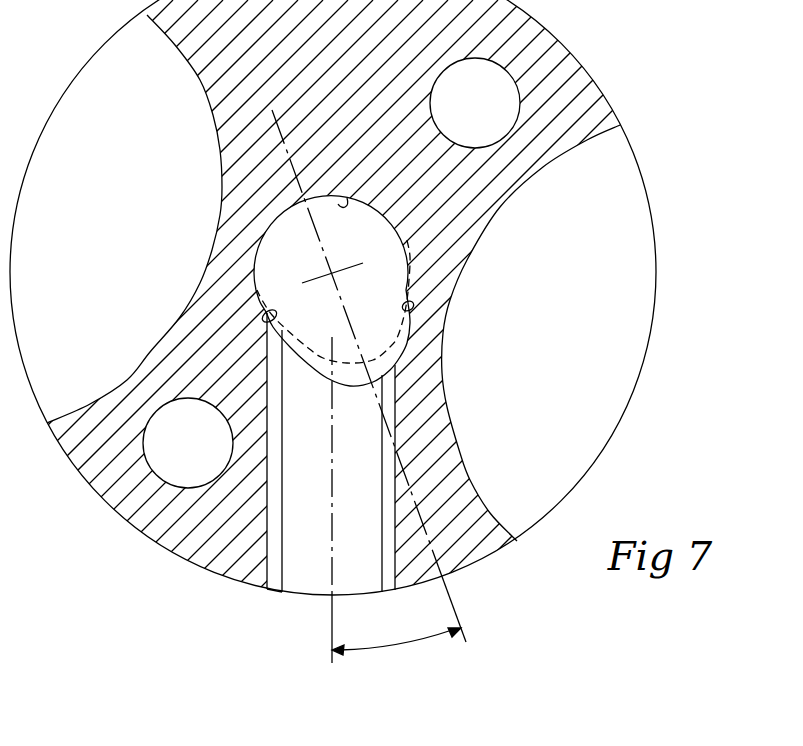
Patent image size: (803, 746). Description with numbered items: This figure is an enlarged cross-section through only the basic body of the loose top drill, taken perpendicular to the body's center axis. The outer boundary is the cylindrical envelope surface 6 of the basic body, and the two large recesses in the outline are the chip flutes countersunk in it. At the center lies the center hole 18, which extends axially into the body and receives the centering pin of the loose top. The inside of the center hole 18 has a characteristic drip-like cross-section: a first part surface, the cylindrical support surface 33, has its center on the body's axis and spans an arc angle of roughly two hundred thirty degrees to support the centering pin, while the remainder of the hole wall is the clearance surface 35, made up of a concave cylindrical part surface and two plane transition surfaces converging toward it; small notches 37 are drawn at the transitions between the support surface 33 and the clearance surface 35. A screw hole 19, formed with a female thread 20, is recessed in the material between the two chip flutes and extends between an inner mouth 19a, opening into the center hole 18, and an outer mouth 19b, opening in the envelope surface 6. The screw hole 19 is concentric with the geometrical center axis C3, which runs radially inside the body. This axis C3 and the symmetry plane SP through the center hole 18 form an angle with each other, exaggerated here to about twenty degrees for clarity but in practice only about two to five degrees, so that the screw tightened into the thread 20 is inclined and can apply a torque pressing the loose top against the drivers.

The envelope surface 6 is at (128, 522).
The center hole 18 is at (288, 257).
The support surface 33 is at (338, 204).
The notches 37 is at (265, 314).
The clearance surface 35 is at (399, 349).
The screw hole 19 is at (397, 407).
The inner mouth 19a is at (303, 377).
The outer mouth 19b is at (300, 594).
The female thread 20 is at (387, 477).
The center axis C3 is at (332, 627).
The symmetry plane SP is at (455, 597).